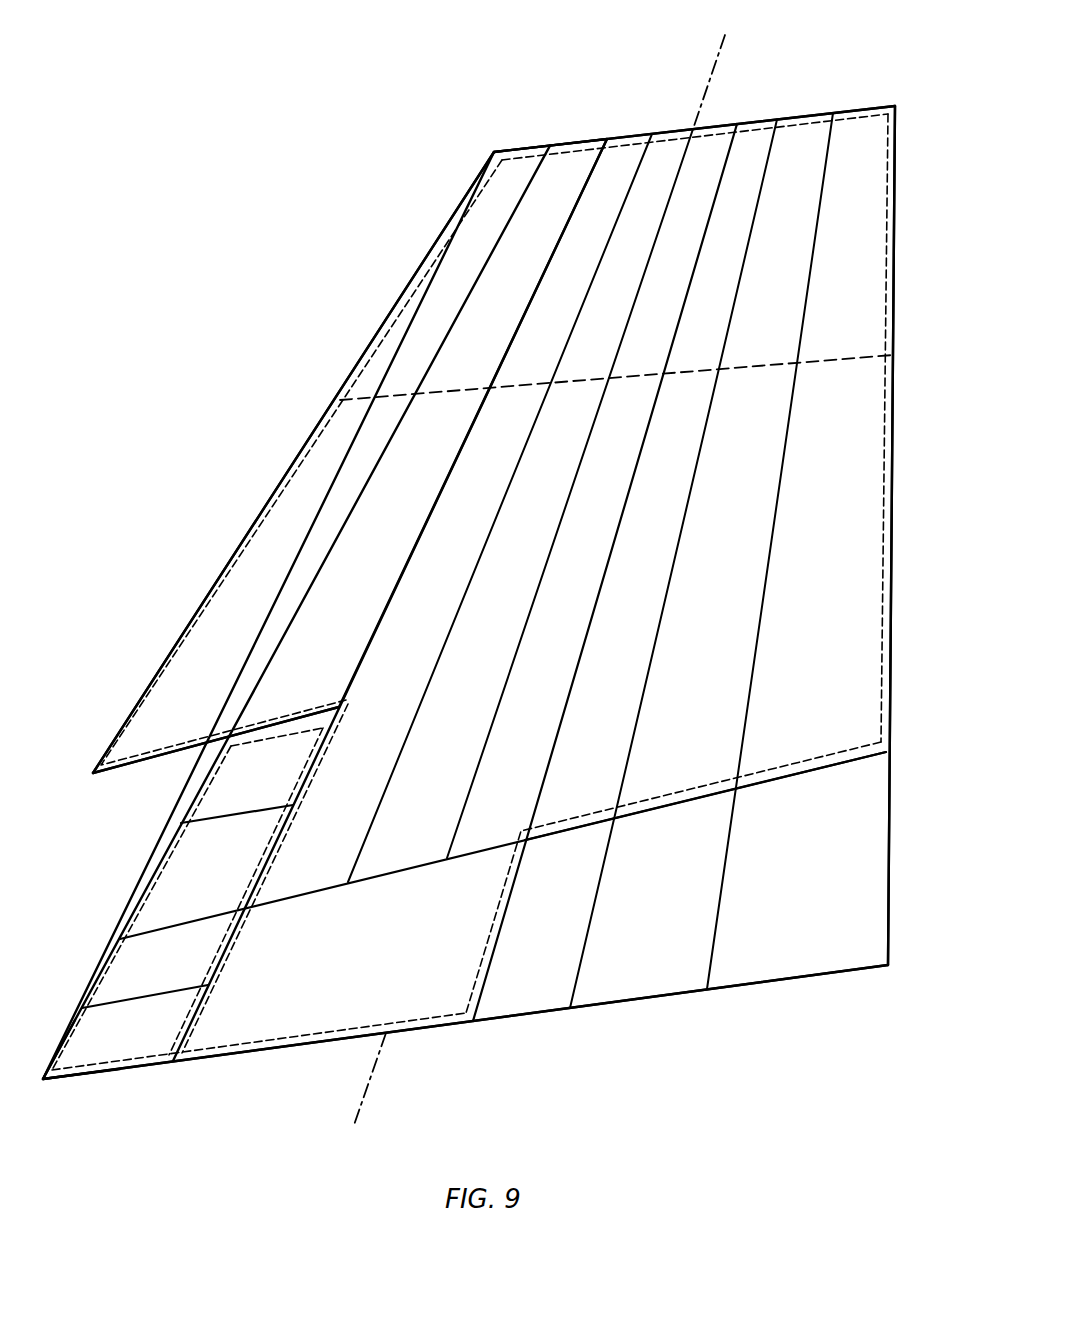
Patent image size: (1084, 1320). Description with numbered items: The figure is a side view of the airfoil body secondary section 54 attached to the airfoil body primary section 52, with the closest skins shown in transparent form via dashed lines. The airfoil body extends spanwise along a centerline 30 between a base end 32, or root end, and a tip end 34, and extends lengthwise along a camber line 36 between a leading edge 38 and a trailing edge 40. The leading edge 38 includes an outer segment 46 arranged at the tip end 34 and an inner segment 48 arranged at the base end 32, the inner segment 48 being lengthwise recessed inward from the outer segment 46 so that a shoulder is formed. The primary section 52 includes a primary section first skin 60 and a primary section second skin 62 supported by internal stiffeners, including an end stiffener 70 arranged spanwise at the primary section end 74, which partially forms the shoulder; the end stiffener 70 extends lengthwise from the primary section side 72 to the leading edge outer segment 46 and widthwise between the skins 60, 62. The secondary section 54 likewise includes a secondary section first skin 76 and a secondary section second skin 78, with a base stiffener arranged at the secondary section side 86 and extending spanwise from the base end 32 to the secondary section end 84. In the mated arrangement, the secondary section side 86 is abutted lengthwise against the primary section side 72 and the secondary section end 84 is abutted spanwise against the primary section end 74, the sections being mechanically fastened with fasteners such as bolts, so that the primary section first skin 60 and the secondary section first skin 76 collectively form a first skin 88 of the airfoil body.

The centerline 30 is at (730, 44).
The base end 32 is at (683, 1000).
The tip end 34 is at (612, 138).
The camber line 36 is at (847, 356).
The leading edge 38 is at (178, 612).
The trailing edge 40 is at (893, 414).
The leading edge outer segment 46 is at (263, 508).
The leading edge inner segment 48 is at (128, 912).
The airfoil body primary section 52 is at (469, 592).
The airfoil body secondary section 54 is at (50, 1100).
The primary section first skin 60 is at (855, 835).
The primary section second skin 62 is at (897, 628).
The end stiffener 70 is at (150, 763).
The primary section side 72 is at (178, 1040).
The primary section end 74 is at (270, 735).
The secondary section first skin 76 is at (103, 1035).
The secondary section second skin 78 is at (103, 1090).
The secondary section end 84 is at (290, 722).
The secondary section side 86 is at (202, 1020).
The first skin 88 is at (855, 835).